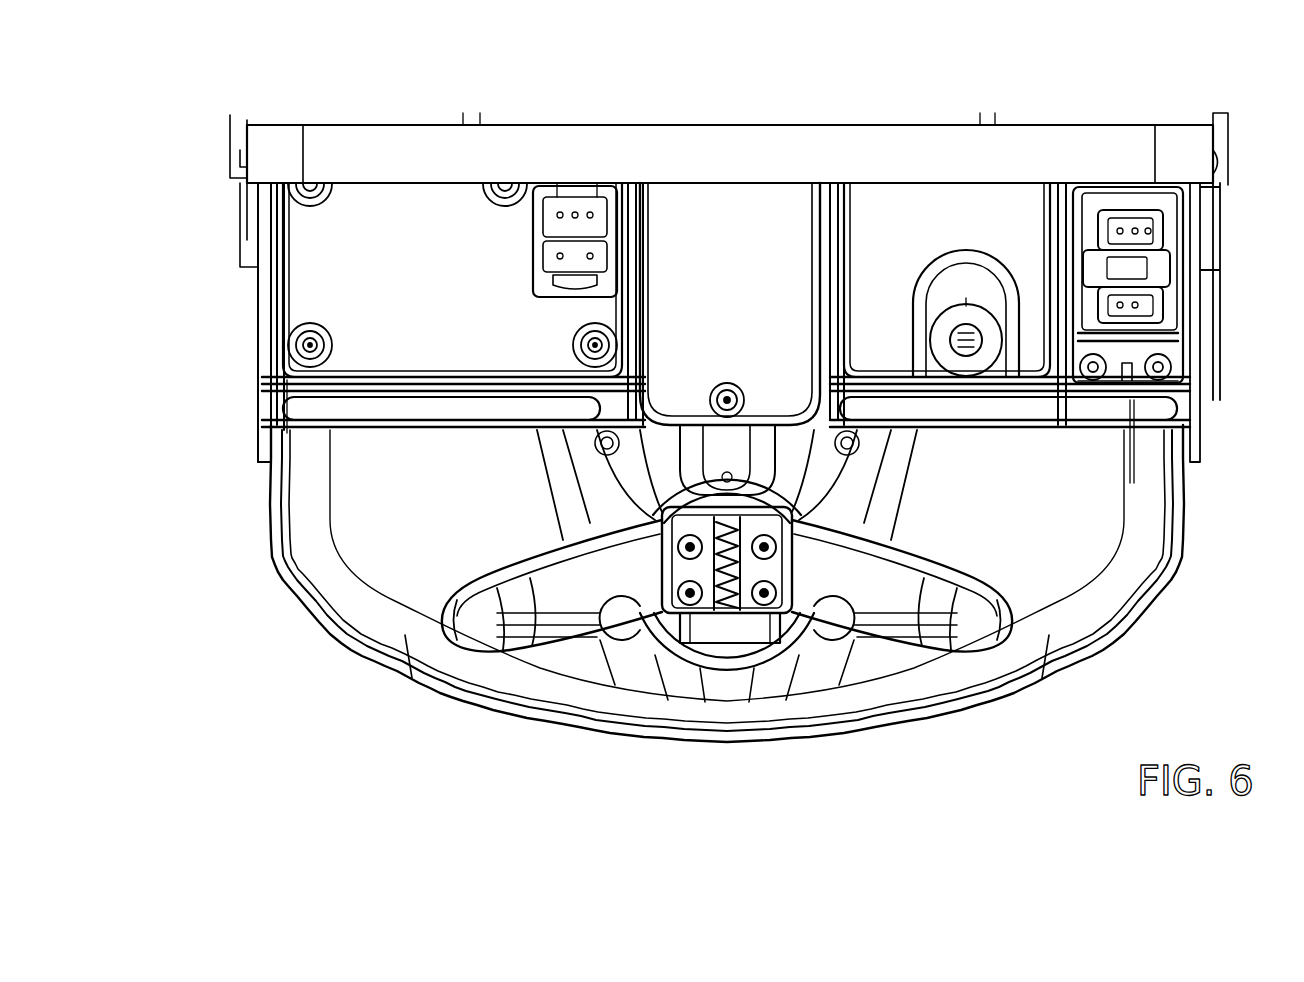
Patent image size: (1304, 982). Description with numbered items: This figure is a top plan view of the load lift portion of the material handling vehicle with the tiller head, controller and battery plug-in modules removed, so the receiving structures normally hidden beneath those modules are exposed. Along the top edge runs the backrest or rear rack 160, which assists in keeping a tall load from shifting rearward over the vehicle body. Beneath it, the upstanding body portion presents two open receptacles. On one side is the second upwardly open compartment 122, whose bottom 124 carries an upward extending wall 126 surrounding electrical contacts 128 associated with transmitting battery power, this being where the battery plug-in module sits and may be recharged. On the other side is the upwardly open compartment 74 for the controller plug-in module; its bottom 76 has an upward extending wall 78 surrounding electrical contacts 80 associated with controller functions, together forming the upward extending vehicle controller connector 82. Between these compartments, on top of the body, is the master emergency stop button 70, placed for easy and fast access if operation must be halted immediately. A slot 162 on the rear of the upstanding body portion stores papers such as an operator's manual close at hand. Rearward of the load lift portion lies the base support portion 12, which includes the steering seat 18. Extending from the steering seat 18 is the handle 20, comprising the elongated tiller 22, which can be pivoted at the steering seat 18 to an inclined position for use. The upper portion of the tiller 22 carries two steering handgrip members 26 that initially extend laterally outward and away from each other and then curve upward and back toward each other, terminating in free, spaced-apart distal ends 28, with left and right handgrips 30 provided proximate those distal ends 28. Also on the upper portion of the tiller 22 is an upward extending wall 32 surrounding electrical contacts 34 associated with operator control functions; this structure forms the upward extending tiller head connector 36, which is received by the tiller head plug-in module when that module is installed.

The base support portion 12 is at (320, 638).
The steering seat 18 is at (590, 523).
The handle 20 is at (689, 652).
The tiller 22 is at (745, 640).
The steering handgrip member 26 is at (453, 630).
The distal end 28 is at (597, 643).
The handgrip 30 is at (547, 633).
The upward extending wall 32 is at (700, 485).
The electrical contacts 34 is at (800, 577).
The tiller head connector 36 is at (729, 615).
The master emergency stop button 70 is at (943, 317).
The upwardly open compartment 74 is at (1105, 183).
The bottom 76 is at (1133, 360).
The upward extending wall 78 is at (1183, 273).
The electrical contacts 80 is at (1150, 307).
The vehicle controller connector 82 is at (1160, 207).
The second upwardly open compartment 122 is at (287, 240).
The bottom 124 is at (320, 287).
The upward extending wall 126 is at (532, 257).
The electrical contacts 128 is at (580, 233).
The rear rack 160 is at (795, 147).
The slot 162 is at (337, 430).